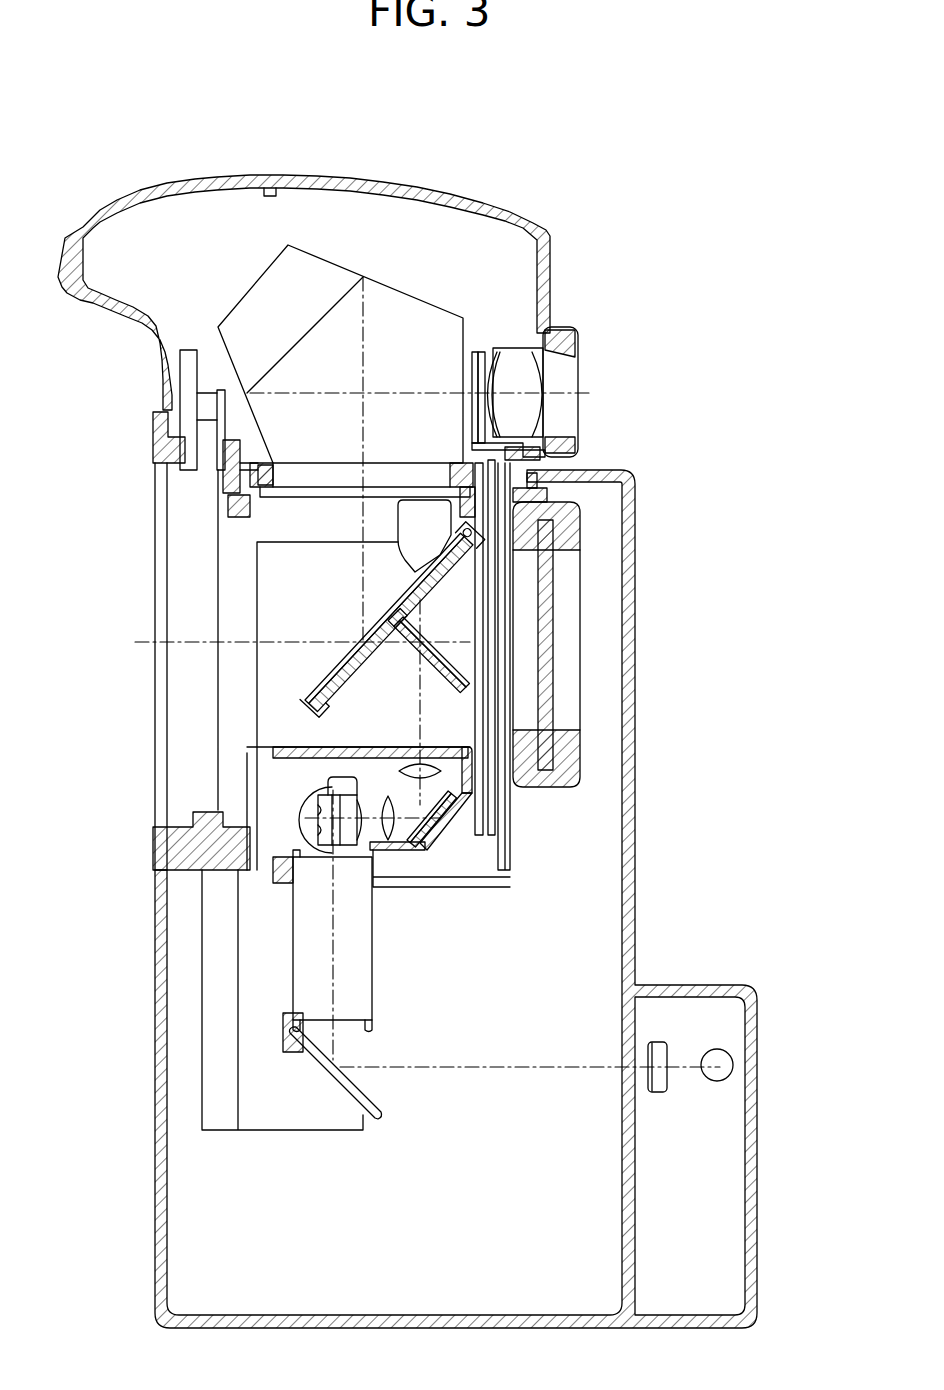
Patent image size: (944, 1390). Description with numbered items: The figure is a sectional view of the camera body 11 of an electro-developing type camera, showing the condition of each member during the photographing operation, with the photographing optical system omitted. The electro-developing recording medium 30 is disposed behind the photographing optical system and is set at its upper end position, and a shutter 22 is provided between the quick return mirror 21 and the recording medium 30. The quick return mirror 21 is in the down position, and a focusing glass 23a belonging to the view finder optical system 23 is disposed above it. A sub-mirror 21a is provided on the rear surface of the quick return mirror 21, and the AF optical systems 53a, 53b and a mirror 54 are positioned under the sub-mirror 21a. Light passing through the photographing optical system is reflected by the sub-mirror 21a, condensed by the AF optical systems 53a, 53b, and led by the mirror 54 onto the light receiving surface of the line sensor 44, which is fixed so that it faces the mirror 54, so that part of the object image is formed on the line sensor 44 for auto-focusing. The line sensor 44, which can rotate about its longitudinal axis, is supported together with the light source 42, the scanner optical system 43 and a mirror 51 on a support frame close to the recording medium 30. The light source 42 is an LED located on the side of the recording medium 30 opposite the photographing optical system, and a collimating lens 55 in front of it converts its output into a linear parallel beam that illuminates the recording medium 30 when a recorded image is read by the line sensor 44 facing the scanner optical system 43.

The camera body 11 is at (630, 891).
The quick return mirror 21 is at (330, 660).
The sub-mirror 21a is at (422, 672).
The shutter 22 is at (510, 580).
The view finder optical system 23 is at (520, 347).
The focusing glass 23a is at (418, 485).
The electro-developing recording medium 30 is at (547, 652).
The light source 42 is at (733, 1060).
The scanner optical system 43 is at (310, 968).
The line sensor 44 is at (333, 848).
The mirror 51 is at (367, 1097).
The AF optical system 53a is at (447, 772).
The AF optical system 53b is at (405, 852).
The mirror 54 is at (430, 840).
The collimating lens 55 is at (668, 1078).